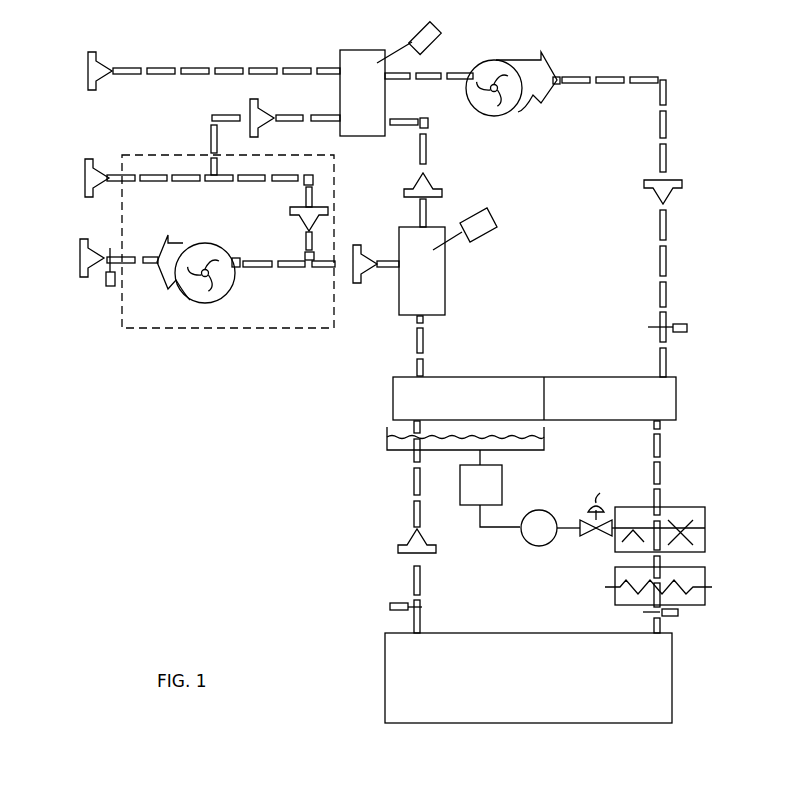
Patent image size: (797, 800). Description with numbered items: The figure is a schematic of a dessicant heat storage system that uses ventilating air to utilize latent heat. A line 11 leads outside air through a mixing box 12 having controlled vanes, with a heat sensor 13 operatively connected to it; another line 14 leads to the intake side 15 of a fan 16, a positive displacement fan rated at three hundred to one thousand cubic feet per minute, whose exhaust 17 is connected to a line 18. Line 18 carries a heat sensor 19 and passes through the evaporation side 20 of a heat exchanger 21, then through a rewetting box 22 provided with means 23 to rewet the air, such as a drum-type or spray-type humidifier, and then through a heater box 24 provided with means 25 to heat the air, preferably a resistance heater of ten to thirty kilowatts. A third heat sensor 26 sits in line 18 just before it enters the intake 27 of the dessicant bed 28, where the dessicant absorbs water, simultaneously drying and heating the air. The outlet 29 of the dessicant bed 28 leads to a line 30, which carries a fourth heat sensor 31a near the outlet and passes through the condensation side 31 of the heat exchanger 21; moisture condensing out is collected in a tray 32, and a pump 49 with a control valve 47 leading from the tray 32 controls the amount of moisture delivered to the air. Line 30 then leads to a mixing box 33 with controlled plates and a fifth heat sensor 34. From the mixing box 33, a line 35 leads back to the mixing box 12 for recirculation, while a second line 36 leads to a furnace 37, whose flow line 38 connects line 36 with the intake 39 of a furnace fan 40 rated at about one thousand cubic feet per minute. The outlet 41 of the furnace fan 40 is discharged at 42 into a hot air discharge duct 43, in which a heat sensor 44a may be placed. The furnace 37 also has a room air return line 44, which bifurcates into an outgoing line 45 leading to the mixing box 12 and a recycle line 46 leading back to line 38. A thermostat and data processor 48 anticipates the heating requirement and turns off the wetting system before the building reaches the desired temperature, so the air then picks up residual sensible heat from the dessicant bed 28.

The line 11 is at (250, 66).
The mixing box 12 is at (364, 50).
The heat sensor 13 is at (442, 29).
The line 14 is at (428, 72).
The intake side 15 is at (474, 82).
The fan 16 is at (507, 98).
The exhaust 17 is at (553, 85).
The line 18 is at (660, 262).
The heat sensor 19 is at (680, 333).
The evaporation side 20 is at (663, 405).
The heat exchanger 21 is at (612, 426).
The rewetting box 22 is at (686, 507).
The means to rewet air 23 is at (690, 522).
The heater box 24 is at (705, 607).
The means to heat air 25 is at (617, 597).
The third heat sensor 26 is at (675, 616).
The intake 27 is at (648, 632).
The dessicant bed 28 is at (583, 722).
The outlet 29 is at (420, 632).
The line 30 is at (417, 338).
The condensation side 31 is at (393, 388).
The damper 31a is at (390, 607).
The tray 32 is at (520, 451).
The mixing box 33 is at (445, 282).
The fifth heat sensor 34 is at (497, 227).
The line 35 is at (427, 152).
The line 36 is at (348, 272).
The furnace 37 is at (325, 183).
The flow line 38 is at (323, 270).
The intake 39 is at (240, 265).
The furnace fan 40 is at (227, 293).
The outlet 41 is at (157, 265).
The discharge 42 is at (120, 257).
The hot air discharge duct 43 is at (80, 273).
The room air return line 44 is at (160, 174).
The damper 44a is at (107, 287).
The outgoing line 45 is at (328, 113).
The recycle line 46 is at (285, 175).
The control valve 47 is at (592, 525).
The thermostat and data processor 48 is at (468, 508).
The pump 49 is at (540, 510).